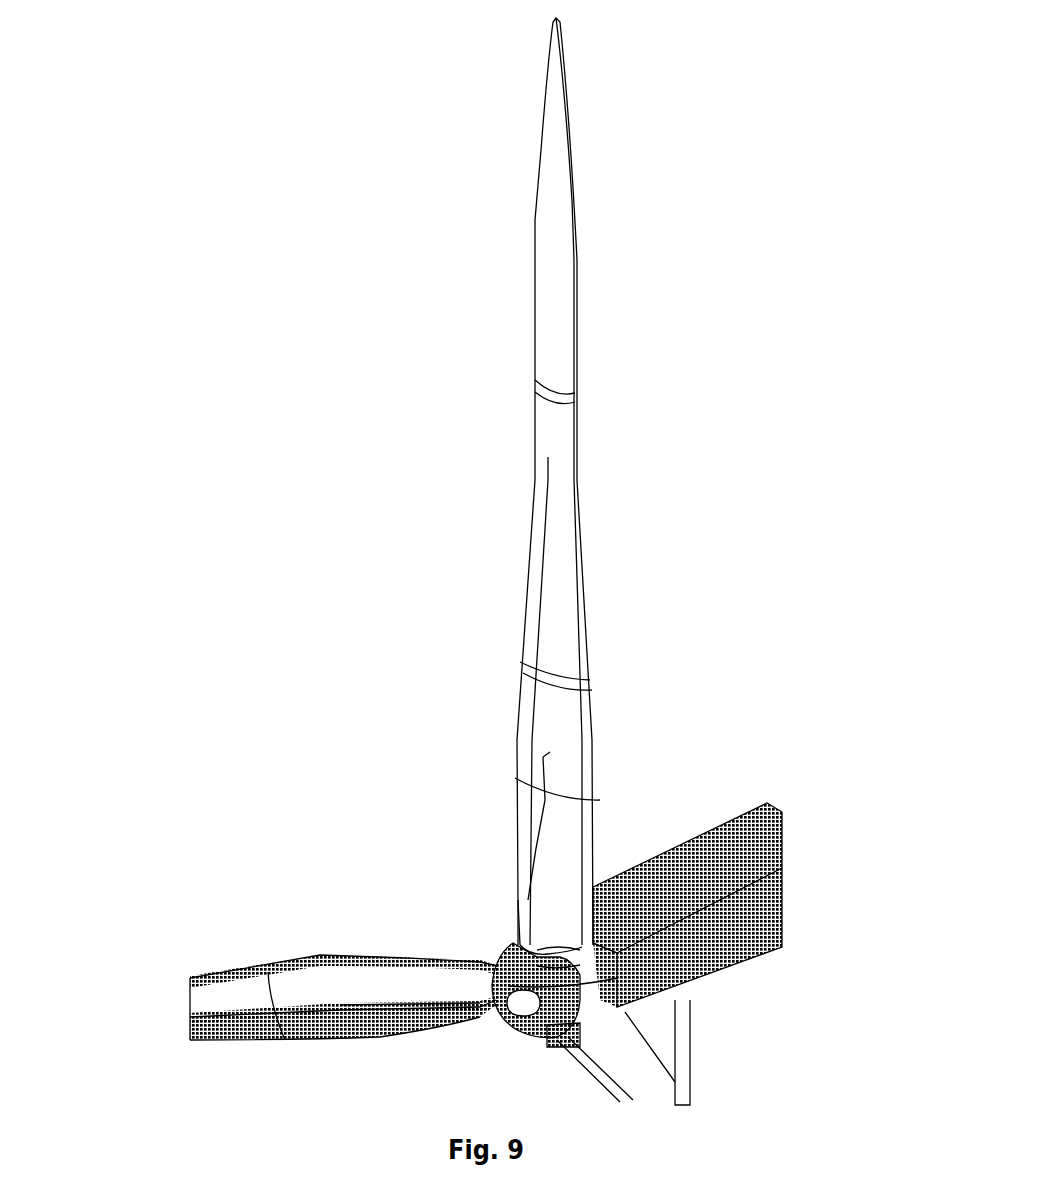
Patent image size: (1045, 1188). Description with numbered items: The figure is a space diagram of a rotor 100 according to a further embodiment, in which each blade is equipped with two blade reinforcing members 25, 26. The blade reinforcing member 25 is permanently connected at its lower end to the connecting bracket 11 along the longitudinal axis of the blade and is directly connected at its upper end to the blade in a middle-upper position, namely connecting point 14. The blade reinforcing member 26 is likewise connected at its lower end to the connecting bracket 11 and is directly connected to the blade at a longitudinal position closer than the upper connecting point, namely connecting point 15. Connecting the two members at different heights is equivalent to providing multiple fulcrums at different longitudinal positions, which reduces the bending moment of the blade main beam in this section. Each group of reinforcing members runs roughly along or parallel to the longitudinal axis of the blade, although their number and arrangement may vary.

The wind turbine 100 is at (672, 390).
The connecting point 14 is at (548, 457).
The blade reinforcing member 25 is at (533, 710).
The connecting point 15 is at (543, 757).
The blade reinforcing member 26 is at (530, 855).
The connecting bracket 11 is at (497, 964).